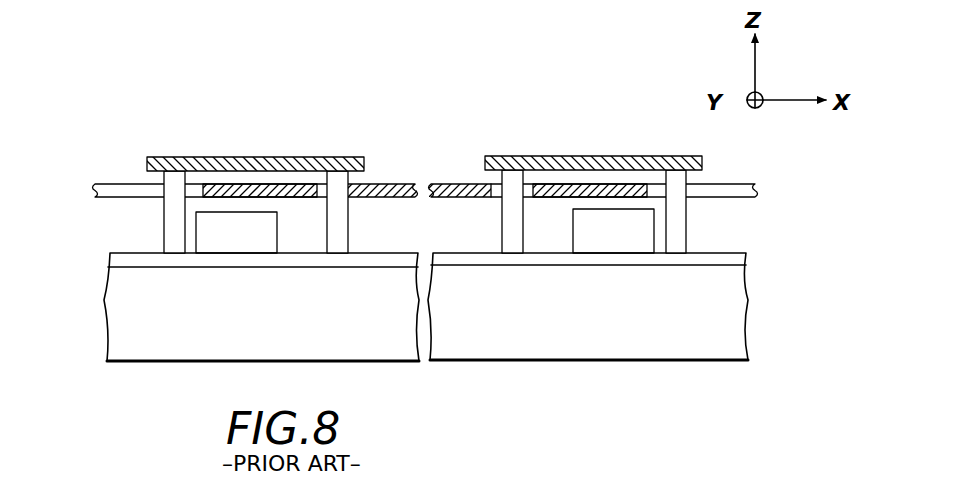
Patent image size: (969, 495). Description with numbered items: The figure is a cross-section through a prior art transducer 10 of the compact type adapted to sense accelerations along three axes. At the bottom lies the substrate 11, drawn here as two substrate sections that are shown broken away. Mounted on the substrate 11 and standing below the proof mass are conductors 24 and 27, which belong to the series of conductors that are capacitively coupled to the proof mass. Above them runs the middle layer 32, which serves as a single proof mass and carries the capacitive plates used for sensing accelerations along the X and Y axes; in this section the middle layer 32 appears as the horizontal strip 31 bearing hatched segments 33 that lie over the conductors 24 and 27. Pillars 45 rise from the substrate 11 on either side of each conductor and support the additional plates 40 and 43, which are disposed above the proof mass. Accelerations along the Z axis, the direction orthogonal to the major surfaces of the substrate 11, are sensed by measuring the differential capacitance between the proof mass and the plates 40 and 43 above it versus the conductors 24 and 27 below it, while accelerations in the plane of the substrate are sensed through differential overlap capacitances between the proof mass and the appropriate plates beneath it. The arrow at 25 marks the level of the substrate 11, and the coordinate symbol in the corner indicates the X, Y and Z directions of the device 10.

The semiconductor device structure 10 is at (838, 262).
The substrate 11 is at (271, 326).
The conductor 24 is at (627, 243).
The first layer level 25 is at (97, 258).
The conductor 27 is at (250, 246).
The interconnect line 31 is at (112, 184).
The middle layer 32 is at (73, 192).
The conductive segment 33 is at (352, 198).
The plate 40 is at (598, 153).
The plate 43 is at (267, 156).
The contact pillar 45 is at (163, 231).